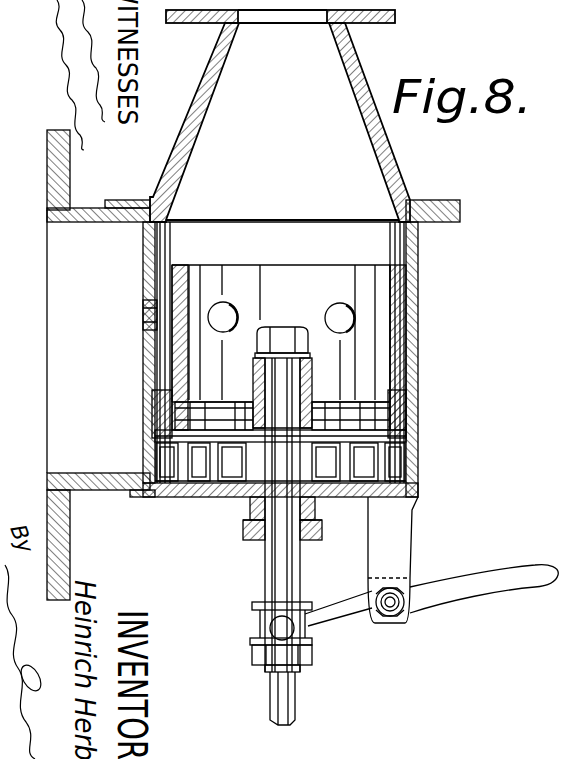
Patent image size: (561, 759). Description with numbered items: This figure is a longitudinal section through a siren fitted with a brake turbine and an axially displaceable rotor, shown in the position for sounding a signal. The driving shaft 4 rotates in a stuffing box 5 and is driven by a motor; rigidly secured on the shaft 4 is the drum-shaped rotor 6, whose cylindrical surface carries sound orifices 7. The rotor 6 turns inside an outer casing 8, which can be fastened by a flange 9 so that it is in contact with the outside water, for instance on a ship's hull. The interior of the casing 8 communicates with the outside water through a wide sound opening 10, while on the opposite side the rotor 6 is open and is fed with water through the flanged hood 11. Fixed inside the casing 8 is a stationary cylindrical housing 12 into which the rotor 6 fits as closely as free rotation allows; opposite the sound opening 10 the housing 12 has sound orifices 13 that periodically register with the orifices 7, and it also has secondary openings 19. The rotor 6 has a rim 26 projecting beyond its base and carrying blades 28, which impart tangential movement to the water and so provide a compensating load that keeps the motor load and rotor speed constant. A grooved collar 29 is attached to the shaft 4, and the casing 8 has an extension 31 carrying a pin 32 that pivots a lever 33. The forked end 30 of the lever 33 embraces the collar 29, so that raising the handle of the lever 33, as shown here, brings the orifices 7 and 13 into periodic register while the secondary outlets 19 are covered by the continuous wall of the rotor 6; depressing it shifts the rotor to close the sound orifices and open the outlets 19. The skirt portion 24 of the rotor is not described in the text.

The driving shaft 4 is at (280, 575).
The stuffing box 5 is at (250, 540).
The rotor 6 is at (281, 347).
The sound orifices 7 is at (226, 312).
The outer casing 8 is at (330, 492).
The flange 9 is at (66, 541).
The sound opening 10 is at (62, 381).
The hood 11 is at (280, 116).
The stationary cylindrical housing 12 is at (143, 374).
The sound orifices 13 is at (160, 322).
The secondary openings 19 is at (150, 428).
The piston skirt 24 is at (355, 410).
The rim 26 is at (190, 398).
The blades 28 is at (362, 466).
The collar 29 is at (262, 606).
The forked end 30 is at (308, 652).
The extension 31 is at (400, 545).
The pin 32 is at (402, 618).
The lever 33 is at (510, 585).